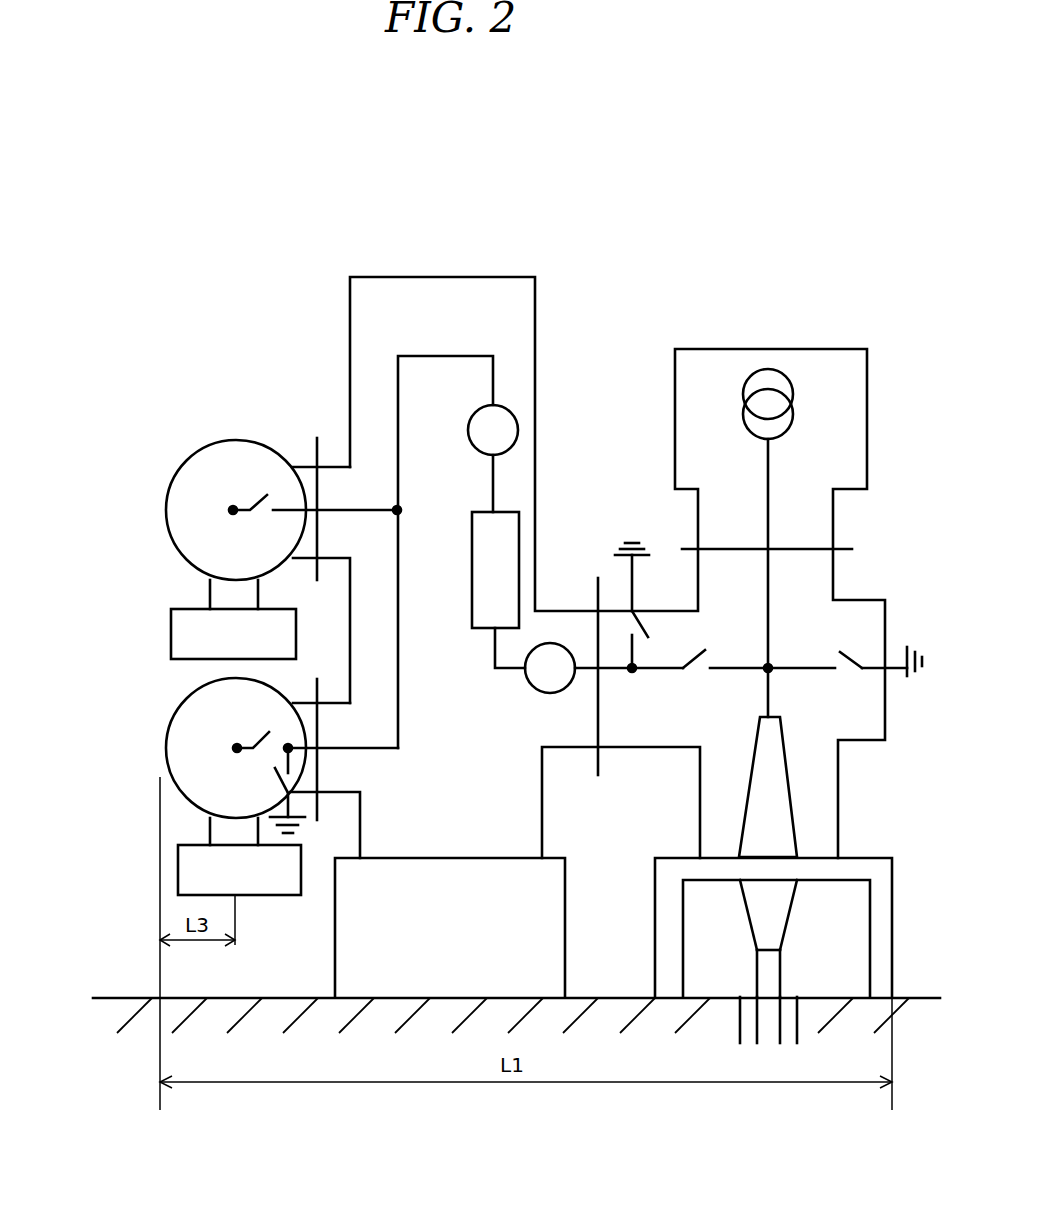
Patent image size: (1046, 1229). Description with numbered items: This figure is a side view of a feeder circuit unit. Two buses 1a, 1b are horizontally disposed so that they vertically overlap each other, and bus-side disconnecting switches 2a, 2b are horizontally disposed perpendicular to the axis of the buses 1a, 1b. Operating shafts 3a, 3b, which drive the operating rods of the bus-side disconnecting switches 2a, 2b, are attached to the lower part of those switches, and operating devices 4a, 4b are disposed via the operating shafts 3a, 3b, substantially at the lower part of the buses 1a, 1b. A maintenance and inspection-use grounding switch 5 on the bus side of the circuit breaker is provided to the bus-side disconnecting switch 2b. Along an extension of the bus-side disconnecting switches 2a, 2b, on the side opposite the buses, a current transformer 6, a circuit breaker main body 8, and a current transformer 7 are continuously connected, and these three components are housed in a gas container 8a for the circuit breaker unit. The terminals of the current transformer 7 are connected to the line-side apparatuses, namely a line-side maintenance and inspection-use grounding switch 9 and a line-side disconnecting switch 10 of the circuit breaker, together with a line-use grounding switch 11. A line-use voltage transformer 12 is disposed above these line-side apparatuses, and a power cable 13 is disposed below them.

The bus 1a is at (233, 510).
The bus-side disconnecting switch 2a is at (265, 498).
The operating shaft 3a is at (210, 588).
The operating device 4a is at (171, 625).
The bus 1b is at (237, 748).
The bus-side disconnecting switch 2b is at (268, 731).
The operating shaft 3b is at (207, 825).
The operating device 4b is at (178, 868).
The maintenance and inspection-use grounding switch 5 is at (287, 786).
The current transformer 6 is at (510, 410).
The current transformer 7 is at (528, 685).
The circuit breaker main body 8 is at (472, 552).
The gas container 8a is at (433, 277).
The line-side maintenance and inspection-use grounding switch 9 is at (647, 628).
The line-side disconnecting switch 10 is at (695, 660).
The line-use grounding switch 11 is at (853, 652).
The line-use voltage transformer 12 is at (778, 365).
The power cable 13 is at (795, 827).